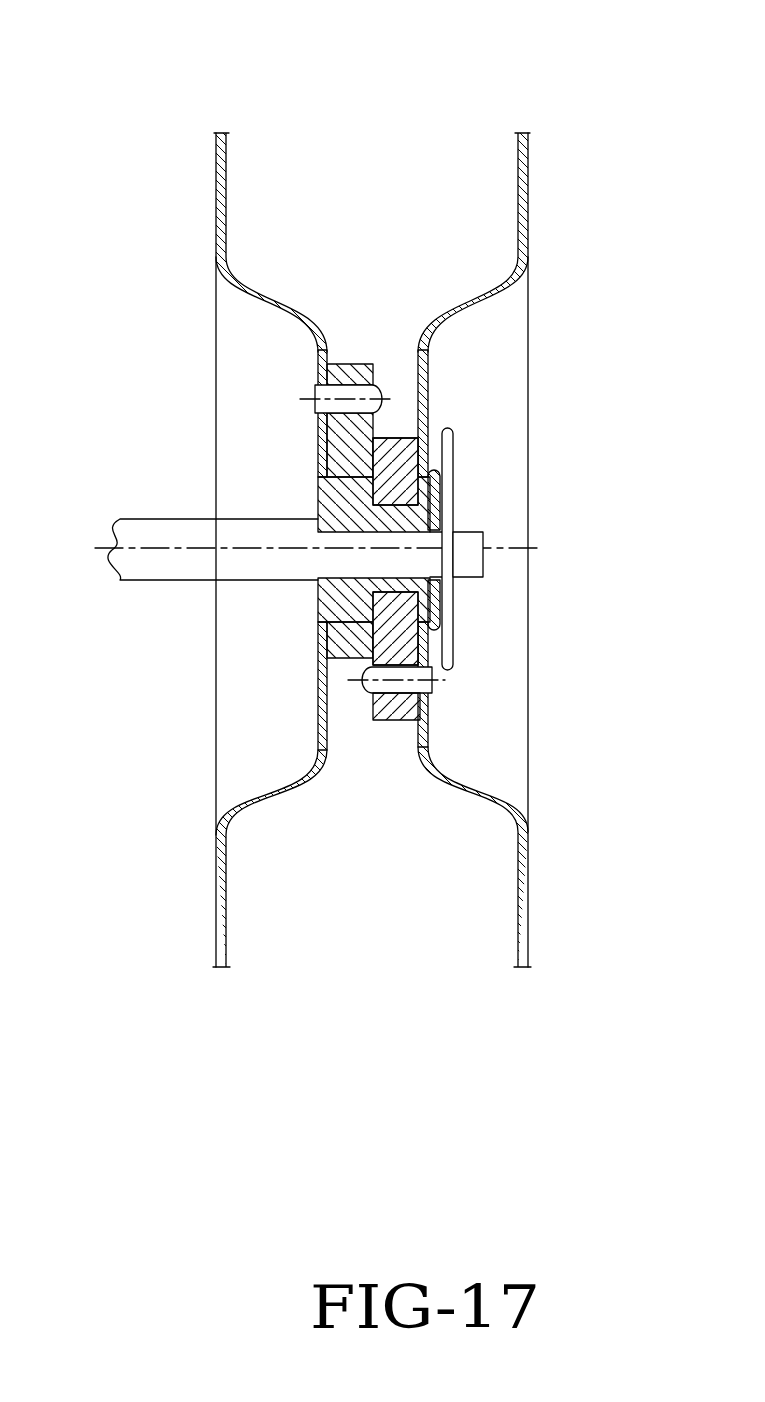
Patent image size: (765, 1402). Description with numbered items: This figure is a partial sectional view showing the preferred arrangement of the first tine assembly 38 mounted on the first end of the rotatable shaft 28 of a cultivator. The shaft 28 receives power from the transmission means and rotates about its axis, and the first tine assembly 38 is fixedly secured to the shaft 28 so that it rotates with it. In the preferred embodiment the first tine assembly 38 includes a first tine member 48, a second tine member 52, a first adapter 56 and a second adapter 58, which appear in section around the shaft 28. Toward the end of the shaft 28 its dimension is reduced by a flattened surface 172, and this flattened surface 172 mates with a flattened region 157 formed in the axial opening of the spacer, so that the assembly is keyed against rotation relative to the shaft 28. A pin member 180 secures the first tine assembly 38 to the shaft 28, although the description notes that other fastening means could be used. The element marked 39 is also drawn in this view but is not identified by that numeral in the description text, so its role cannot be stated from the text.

The first tine assembly 38 is at (440, 116).
The second tine member 52 is at (225, 162).
The first tine member 48 is at (465, 300).
The first adapter 56 is at (408, 443).
The second adapter 58 is at (338, 365).
The flattened region 157 is at (325, 535).
The shaft 28 is at (125, 533).
The washer 39 is at (422, 570).
The pin member 180 is at (450, 432).
The flattened surface 172 is at (470, 528).